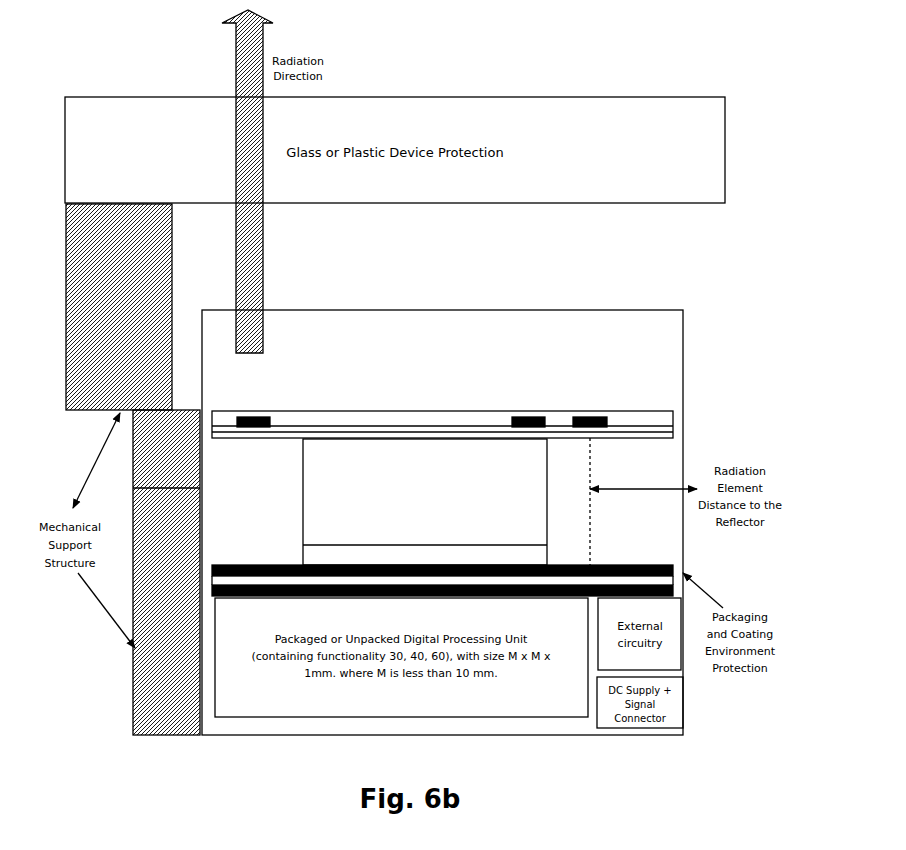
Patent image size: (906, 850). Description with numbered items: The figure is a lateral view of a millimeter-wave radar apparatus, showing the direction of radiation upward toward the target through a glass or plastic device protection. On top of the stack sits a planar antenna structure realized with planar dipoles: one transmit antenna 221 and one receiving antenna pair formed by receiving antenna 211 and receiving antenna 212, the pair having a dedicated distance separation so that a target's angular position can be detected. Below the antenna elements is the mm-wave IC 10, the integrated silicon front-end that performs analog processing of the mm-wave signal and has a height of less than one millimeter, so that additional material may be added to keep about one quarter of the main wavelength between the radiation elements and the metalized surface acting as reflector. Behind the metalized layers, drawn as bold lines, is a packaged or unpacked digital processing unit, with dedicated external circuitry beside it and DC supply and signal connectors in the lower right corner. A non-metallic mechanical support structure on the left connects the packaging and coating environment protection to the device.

The transmit antenna 221 is at (250, 418).
The receiving antenna 211 is at (530, 417).
The receiving antenna 212 is at (597, 410).
The mm-wave IC 10 is at (425, 502).